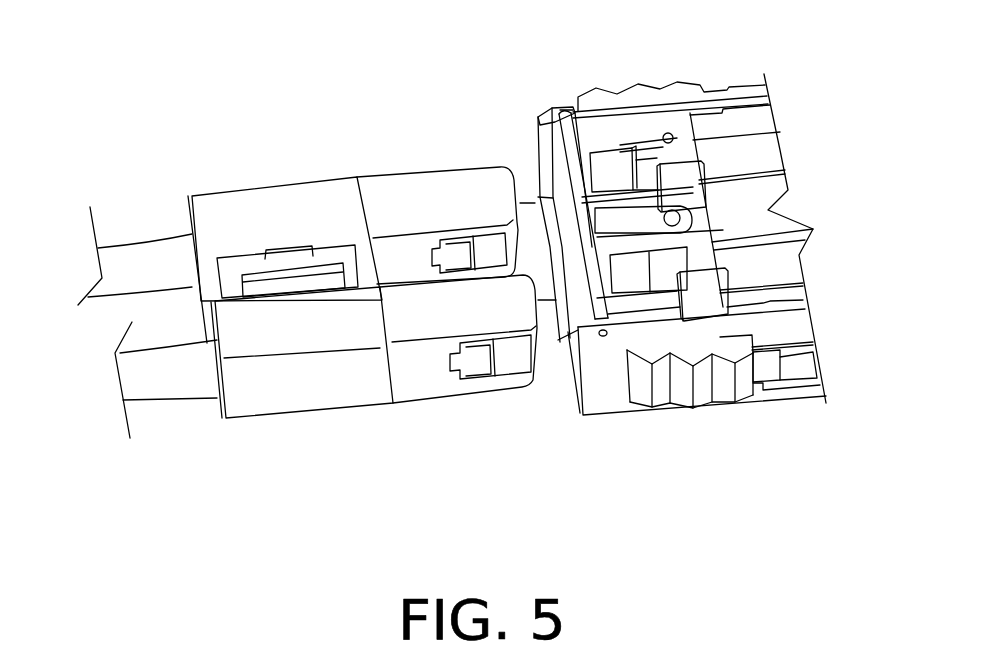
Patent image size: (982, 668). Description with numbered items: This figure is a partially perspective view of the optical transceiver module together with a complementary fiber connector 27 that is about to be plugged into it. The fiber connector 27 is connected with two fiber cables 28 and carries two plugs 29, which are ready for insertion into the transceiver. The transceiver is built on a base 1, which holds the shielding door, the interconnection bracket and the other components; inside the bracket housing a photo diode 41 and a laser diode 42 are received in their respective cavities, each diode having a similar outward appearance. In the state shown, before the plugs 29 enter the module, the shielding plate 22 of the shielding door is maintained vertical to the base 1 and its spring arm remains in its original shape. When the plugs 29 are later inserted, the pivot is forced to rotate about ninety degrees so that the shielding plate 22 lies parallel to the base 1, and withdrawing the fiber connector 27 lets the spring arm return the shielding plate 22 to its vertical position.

The base 1 is at (567, 379).
The shielding plate 22 is at (574, 316).
The fiber connector 27 is at (296, 181).
The fiber cables 28 is at (153, 238).
The plugs 29 is at (472, 187).
The photo diode 41 is at (681, 165).
The laser diode 42 is at (690, 287).